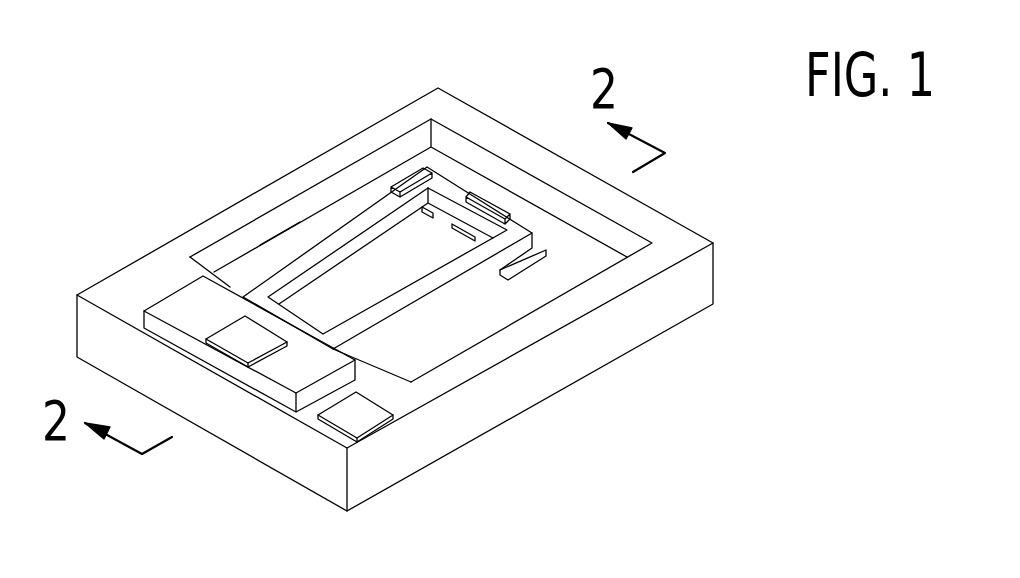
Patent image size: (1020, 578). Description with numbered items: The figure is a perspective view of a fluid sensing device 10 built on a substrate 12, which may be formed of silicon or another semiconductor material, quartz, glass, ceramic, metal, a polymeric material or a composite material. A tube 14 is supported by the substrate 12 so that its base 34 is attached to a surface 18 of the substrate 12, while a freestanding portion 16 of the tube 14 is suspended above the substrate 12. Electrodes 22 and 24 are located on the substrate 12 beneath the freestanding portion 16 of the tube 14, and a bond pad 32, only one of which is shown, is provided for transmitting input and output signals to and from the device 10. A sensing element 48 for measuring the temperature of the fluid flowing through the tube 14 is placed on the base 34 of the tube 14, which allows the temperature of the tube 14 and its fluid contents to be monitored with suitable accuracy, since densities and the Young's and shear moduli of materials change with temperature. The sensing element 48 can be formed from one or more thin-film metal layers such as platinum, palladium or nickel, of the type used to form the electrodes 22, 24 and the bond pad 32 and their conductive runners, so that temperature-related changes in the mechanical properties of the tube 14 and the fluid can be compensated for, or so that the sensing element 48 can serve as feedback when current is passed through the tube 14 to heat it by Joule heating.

The fluid sensing device 10 is at (182, 76).
The substrate 12 is at (555, 378).
The tube 14 is at (448, 298).
The freestanding portion 16 is at (365, 213).
The surface 18 is at (293, 186).
The electrode 22 is at (490, 205).
The electrode 24 is at (395, 185).
The bond pad 32 is at (378, 425).
The base 34 is at (176, 310).
The sensing element 48 is at (270, 352).